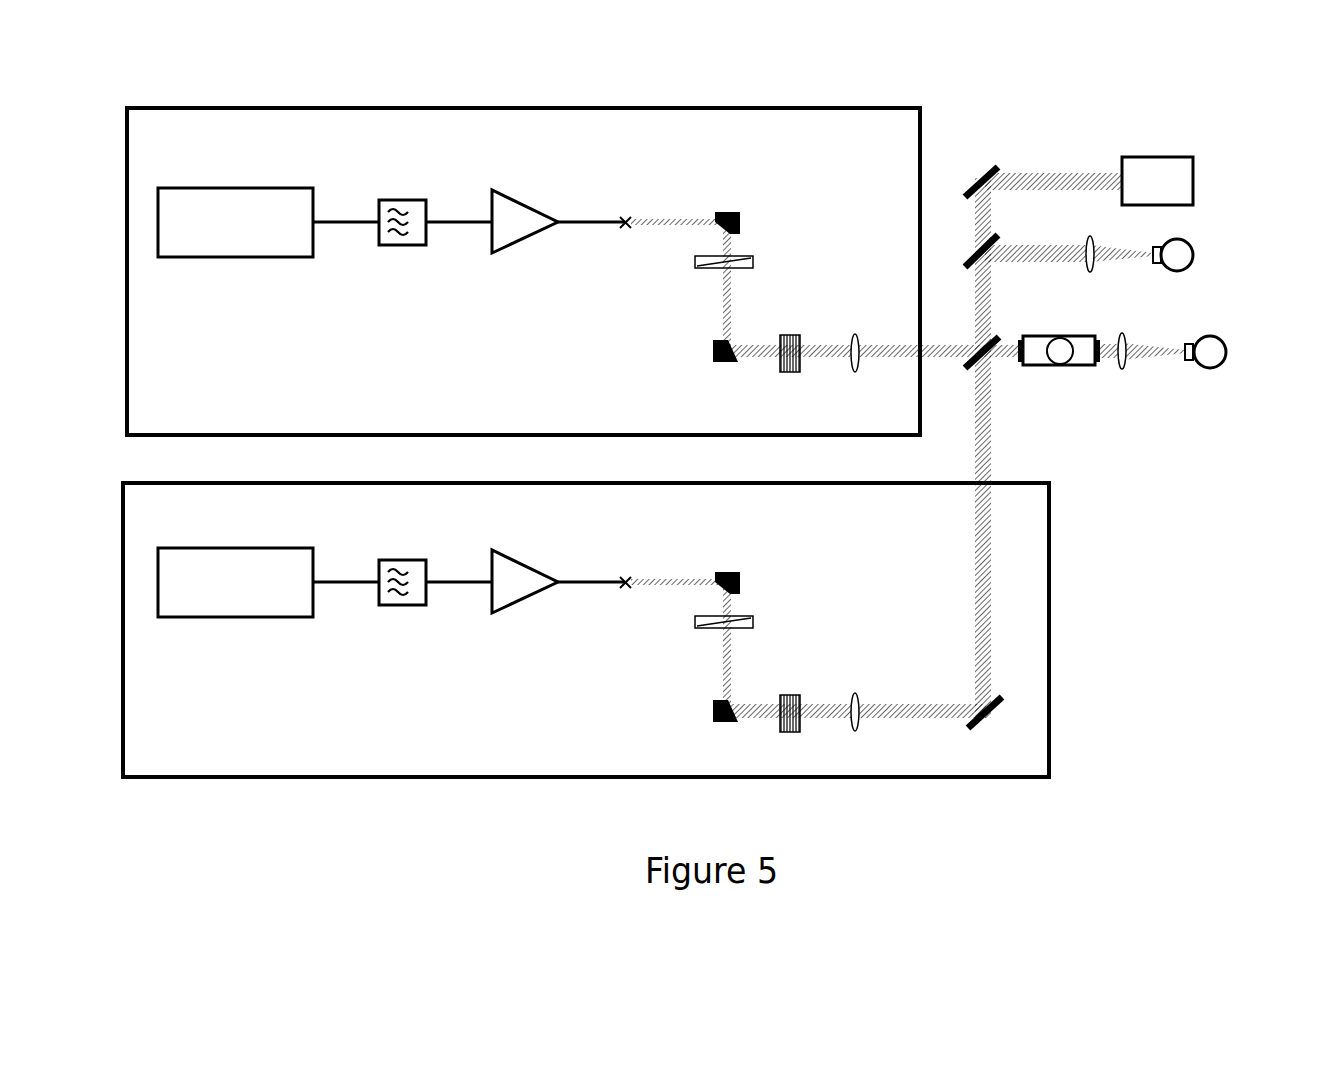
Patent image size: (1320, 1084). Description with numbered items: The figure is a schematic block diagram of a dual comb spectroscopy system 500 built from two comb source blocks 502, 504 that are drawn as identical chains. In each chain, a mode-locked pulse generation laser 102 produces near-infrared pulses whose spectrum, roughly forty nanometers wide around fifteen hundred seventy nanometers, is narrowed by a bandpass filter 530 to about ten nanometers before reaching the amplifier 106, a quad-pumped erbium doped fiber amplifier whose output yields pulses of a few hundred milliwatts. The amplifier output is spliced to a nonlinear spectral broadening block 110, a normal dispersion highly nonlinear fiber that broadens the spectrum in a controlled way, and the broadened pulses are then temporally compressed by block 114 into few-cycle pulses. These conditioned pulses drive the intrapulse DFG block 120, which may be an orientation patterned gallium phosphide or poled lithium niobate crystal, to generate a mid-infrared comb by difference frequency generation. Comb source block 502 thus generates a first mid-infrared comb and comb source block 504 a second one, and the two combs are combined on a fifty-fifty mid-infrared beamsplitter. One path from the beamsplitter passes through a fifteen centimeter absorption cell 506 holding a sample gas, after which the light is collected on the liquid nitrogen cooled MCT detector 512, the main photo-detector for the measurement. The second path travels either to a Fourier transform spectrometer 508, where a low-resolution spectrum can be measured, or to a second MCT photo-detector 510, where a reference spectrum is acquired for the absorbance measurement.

The dual comb spectroscopy system 500 is at (1185, 524).
The comb source block 502 is at (497, 383).
The comb source block 504 is at (437, 720).
The mode-locked pulse generation laser 102 is at (268, 402).
The bandpass filter 530 is at (435, 389).
The amplifier 106 is at (558, 388).
The nonlinear spectral broadening block 110 is at (680, 446).
The temporal compression block 114 is at (749, 440).
The intrapulse DFG block 120 is at (872, 518).
The absorption cell 506 is at (1059, 370).
The Fourier transform spectrometer 508 is at (1089, 181).
The second MCT photo-detector 510 is at (1118, 254).
The MCT detector 512 is at (1191, 351).